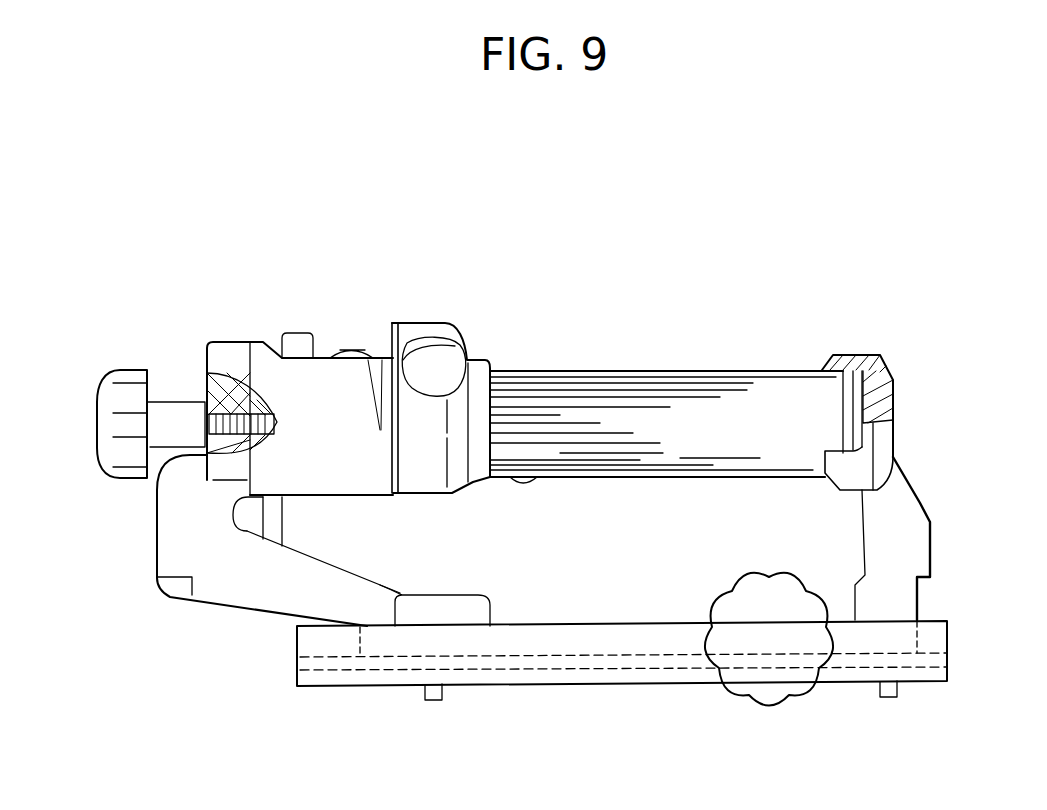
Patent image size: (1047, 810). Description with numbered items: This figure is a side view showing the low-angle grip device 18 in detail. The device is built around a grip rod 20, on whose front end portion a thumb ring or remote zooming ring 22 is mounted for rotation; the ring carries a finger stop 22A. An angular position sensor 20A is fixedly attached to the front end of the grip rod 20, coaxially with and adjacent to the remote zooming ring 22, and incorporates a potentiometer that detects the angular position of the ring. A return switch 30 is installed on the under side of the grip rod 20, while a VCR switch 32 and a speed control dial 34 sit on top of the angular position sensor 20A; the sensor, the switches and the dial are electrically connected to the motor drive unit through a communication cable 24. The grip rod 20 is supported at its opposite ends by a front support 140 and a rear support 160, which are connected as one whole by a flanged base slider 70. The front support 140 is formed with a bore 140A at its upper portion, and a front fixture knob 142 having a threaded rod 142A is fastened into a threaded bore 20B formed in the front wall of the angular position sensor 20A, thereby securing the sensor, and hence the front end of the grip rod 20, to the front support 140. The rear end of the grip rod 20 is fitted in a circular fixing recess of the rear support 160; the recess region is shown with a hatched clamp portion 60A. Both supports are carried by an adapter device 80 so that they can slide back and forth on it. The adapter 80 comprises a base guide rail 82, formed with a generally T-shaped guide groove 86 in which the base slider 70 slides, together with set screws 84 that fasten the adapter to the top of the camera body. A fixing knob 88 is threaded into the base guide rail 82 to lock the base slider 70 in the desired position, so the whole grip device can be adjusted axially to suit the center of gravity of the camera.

The low-angle grip device 18 is at (666, 381).
The grip rod 20 is at (693, 368).
The angular position sensor 20A is at (317, 367).
The threaded bore 20B is at (827, 360).
The remote zooming ring 22 is at (423, 325).
The finger stop 22A is at (448, 363).
The communication cable 24 is at (287, 536).
The return switch 30 is at (525, 484).
The VCR switch 32 is at (365, 352).
The speed control dial 34 is at (290, 333).
The clamp portion 60A is at (880, 370).
The base slider 70 is at (907, 640).
The adapter device 80 is at (947, 647).
The base guide rail 82 is at (632, 643).
The set screws 84 is at (433, 700).
The guide groove 86 is at (538, 667).
The fixing knob 88 is at (768, 690).
The front support 140 is at (233, 598).
The bore 140A is at (207, 417).
The front fixture knob 142 is at (102, 462).
The threaded rod 142A is at (230, 410).
The rear support 160 is at (920, 507).